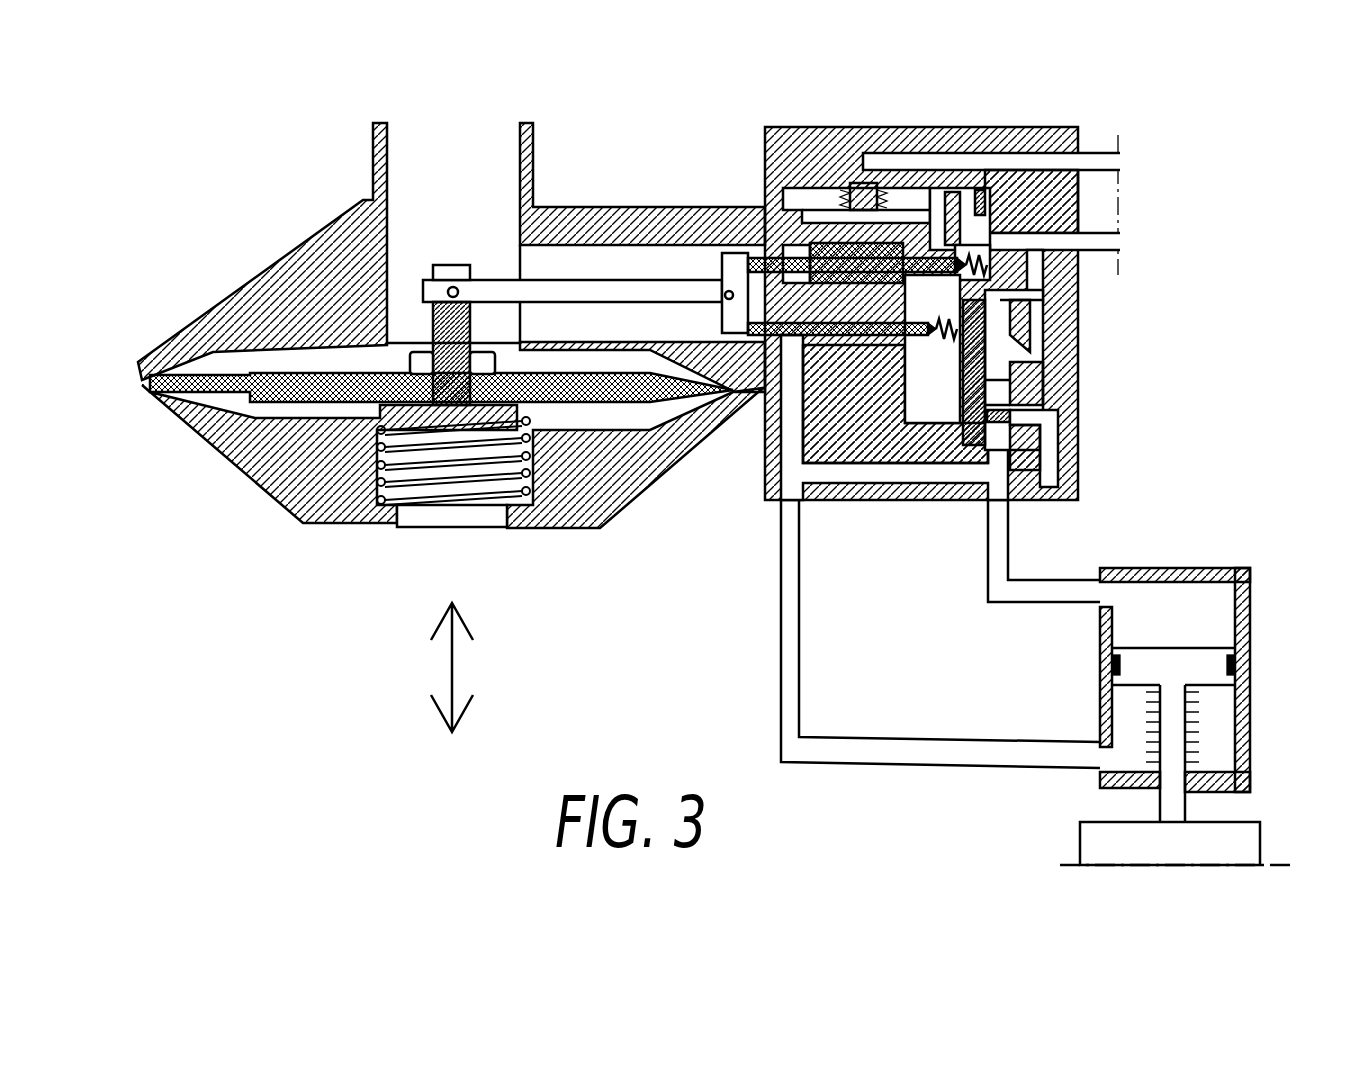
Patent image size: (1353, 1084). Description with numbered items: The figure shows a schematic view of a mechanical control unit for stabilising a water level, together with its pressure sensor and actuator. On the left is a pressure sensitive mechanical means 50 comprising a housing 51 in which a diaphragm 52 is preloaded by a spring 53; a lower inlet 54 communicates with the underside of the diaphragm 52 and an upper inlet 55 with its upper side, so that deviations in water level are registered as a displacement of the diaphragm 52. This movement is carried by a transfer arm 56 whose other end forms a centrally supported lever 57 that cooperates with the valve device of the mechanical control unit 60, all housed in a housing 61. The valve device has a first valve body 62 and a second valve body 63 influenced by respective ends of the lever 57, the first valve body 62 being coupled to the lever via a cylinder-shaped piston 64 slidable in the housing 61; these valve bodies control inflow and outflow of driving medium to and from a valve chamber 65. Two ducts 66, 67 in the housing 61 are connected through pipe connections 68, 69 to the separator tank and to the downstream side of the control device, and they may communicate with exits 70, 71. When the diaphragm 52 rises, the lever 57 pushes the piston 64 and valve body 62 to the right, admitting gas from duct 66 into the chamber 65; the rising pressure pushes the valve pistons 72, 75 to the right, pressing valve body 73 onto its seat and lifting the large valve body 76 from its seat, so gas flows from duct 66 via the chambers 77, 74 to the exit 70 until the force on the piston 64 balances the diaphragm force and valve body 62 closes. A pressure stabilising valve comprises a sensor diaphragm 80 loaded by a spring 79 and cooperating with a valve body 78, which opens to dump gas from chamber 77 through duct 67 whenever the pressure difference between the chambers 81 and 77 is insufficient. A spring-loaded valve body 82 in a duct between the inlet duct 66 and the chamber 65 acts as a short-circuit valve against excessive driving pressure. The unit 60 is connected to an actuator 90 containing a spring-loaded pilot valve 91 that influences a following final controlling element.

The pressure sensitive mechanical means 50 is at (241, 281).
The housing 51 is at (270, 472).
The diaphragm 52 is at (212, 392).
The spring 53 is at (487, 495).
The lower inlet 54 is at (425, 515).
The upper inlet 55 is at (427, 135).
The transfer arm 56 is at (558, 295).
The lever 57 is at (717, 253).
The mechanical control unit 60 is at (943, 127).
The housing 61 is at (873, 482).
The first valve body 62 is at (957, 188).
The second valve body 63 is at (758, 428).
The cylinder-shaped piston 64 is at (802, 247).
The valve chamber 65 is at (854, 349).
The duct 66 is at (1055, 245).
The duct 67 is at (1048, 160).
The pipe connection 68 is at (1108, 245).
The pipe connection 69 is at (1108, 163).
The exit 70 is at (1003, 513).
The exit 71 is at (793, 510).
The valve piston 72 is at (990, 437).
The valve body 73 is at (1020, 418).
The chamber 74 is at (1003, 393).
The valve piston 75 is at (985, 353).
The valve body 76 is at (1040, 336).
The chamber 77 is at (912, 200).
The valve body 78 is at (867, 187).
The spring 79 is at (857, 187).
The sensor diaphragm 80 is at (803, 187).
The chamber 81 is at (840, 212).
The spring-loaded valve body 82 is at (983, 188).
The actuator 90 is at (1250, 607).
The spring-loaded pilot valve 91 is at (1127, 677).